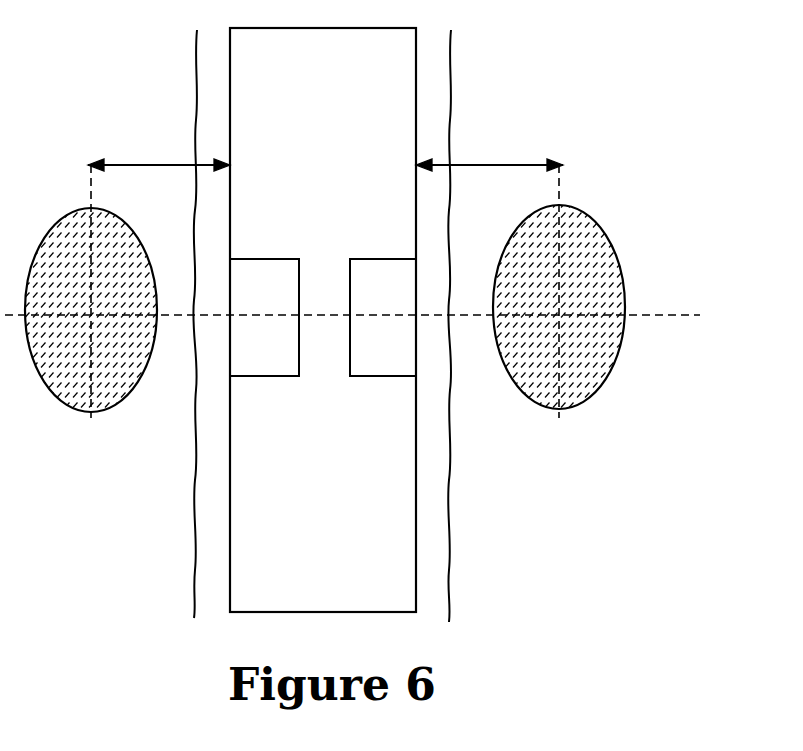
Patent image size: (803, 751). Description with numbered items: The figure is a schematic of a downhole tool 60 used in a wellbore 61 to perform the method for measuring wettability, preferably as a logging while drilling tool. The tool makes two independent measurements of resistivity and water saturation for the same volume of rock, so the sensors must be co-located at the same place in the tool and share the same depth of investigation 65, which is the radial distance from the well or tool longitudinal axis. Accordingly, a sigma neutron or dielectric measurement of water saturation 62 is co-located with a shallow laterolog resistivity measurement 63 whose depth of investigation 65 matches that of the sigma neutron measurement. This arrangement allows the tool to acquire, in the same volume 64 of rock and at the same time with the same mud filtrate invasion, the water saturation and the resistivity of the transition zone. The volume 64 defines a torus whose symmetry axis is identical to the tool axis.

The downhole tool 60 is at (323, 320).
The wellbore 61 is at (368, 323).
The sigma neutron measurement of water saturation 62 is at (262, 340).
The shallow laterolog resistivity measurement 63 is at (387, 340).
The volume of rock 64 is at (590, 265).
The depth of investigation 65 is at (325, 149).